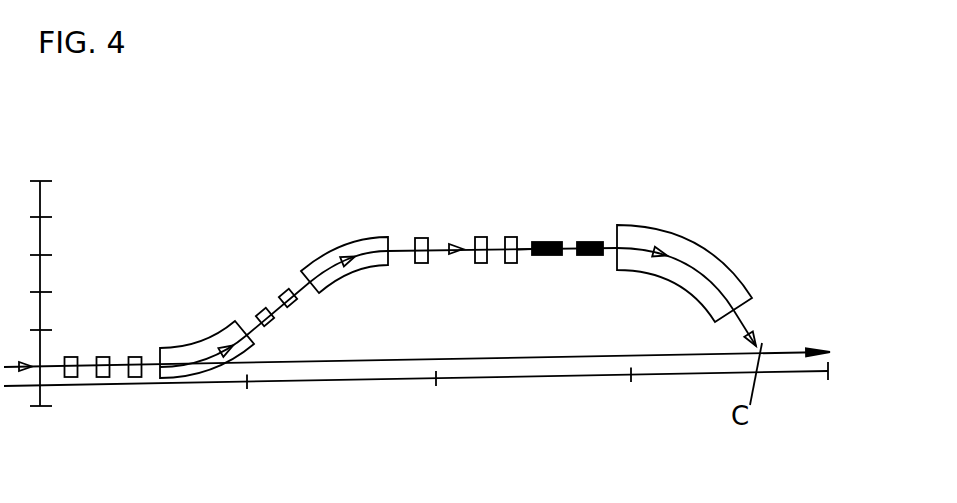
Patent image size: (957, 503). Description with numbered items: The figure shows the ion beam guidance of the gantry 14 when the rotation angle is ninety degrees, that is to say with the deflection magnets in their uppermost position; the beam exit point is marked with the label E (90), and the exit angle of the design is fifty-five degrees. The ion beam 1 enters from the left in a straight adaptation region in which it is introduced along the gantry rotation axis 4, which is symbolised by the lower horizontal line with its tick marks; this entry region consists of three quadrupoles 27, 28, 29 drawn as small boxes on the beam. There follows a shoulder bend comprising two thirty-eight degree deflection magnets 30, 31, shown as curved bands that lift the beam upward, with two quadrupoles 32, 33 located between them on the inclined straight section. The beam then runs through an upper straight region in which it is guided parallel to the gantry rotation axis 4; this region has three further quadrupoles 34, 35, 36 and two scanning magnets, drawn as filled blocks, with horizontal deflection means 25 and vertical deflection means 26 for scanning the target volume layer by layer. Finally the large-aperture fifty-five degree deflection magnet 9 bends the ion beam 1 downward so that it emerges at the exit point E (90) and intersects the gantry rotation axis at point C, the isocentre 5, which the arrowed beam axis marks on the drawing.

The ion beam 1 is at (437, 248).
The gantry rotation axis 4 is at (509, 376).
The isocentre 5 is at (763, 352).
The deflection magnet 9 is at (703, 247).
The gantry 14 is at (588, 186).
The horizontal deflection means 25 is at (548, 255).
The vertical deflection means 26 is at (590, 255).
The quadrupole 27 is at (70, 357).
The quadrupole 28 is at (104, 357).
The quadrupole 29 is at (136, 357).
The deflection magnet 30 is at (203, 347).
The deflection magnet 31 is at (333, 250).
The quadrupole 32 is at (258, 310).
The quadrupole 33 is at (284, 290).
The quadrupole 34 is at (423, 238).
The quadrupole 35 is at (480, 237).
The quadrupole 36 is at (510, 237).
The bending magnet deflection angle E 90 is at (730, 280).